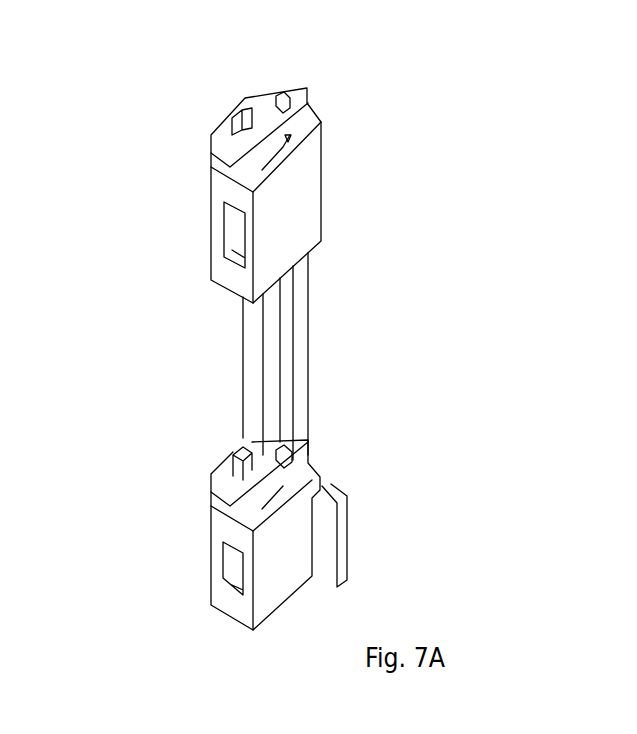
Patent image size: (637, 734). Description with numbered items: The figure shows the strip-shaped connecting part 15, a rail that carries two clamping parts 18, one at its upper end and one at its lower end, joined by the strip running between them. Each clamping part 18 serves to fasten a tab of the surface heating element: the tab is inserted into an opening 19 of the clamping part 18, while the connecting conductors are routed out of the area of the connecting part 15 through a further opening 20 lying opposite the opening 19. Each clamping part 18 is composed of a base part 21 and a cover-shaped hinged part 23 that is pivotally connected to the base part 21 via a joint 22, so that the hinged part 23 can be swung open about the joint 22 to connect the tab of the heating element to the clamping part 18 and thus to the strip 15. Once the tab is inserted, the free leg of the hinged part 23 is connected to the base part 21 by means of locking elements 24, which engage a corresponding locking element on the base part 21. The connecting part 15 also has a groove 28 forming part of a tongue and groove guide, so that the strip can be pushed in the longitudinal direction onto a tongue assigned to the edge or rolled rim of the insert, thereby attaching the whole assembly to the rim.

The strip-shaped connecting part 15 is at (308, 348).
The clamping part 18 is at (282, 252).
The opening 19 is at (288, 472).
The further opening 20 is at (288, 137).
The base part 21 is at (233, 158).
The joint 22 is at (230, 170).
The cover-shaped hinged part 23 is at (297, 190).
The locking element 24 is at (283, 102).
The groove 28 is at (245, 123).